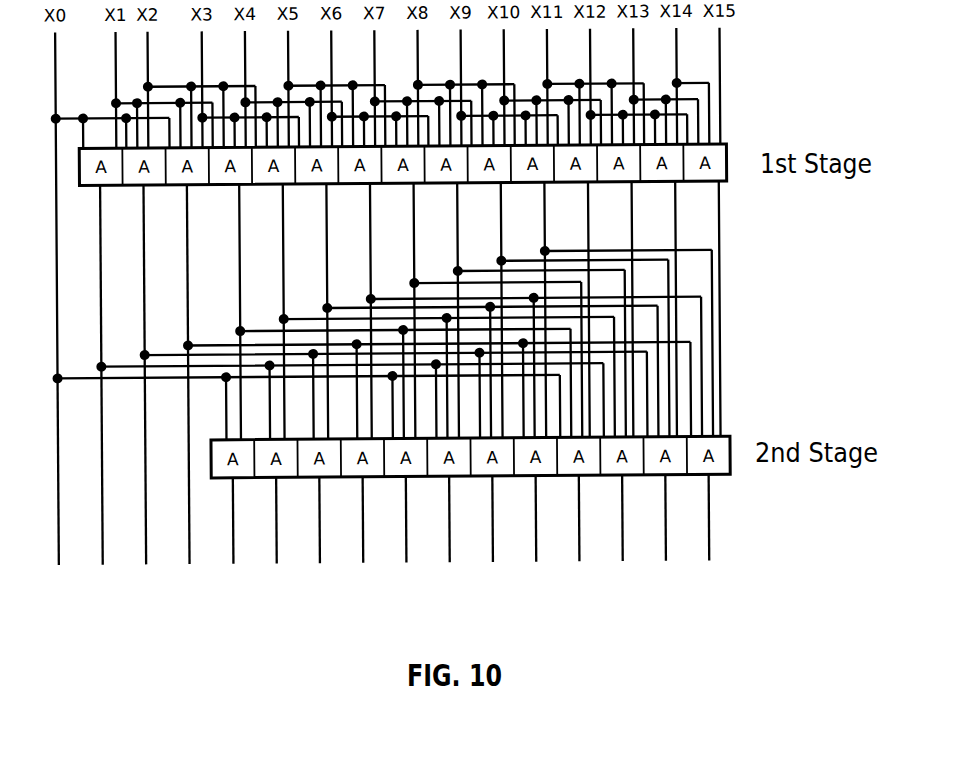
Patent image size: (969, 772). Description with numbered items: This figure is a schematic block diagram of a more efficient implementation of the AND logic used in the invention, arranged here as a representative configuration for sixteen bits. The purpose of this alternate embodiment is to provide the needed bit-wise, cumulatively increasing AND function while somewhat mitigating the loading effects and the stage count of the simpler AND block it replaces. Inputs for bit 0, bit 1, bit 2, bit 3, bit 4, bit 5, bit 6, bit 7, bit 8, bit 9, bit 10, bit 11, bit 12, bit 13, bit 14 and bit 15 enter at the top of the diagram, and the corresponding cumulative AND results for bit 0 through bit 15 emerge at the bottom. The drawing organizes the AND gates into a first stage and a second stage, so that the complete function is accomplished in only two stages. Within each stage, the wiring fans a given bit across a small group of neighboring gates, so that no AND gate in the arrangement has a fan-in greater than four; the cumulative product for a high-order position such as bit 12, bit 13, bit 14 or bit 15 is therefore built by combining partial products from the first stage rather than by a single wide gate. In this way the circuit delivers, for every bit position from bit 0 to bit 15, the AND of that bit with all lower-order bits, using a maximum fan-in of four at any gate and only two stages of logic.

The output bit 0 line 0 is at (58, 491).
The output bit 1 line 1 is at (101, 394).
The output bit 2 line 2 is at (145, 394).
The output bit 3 line 3 is at (188, 394).
The output bit 4 line 4 is at (233, 541).
The output bit 5 line 5 is at (276, 540).
The output bit 6 line 6 is at (320, 540).
The AND block 7 is at (363, 540).
The output bit 8 line 8 is at (406, 540).
The output bit 9 line 9 is at (449, 539).
The output bit 10 line 10 is at (492, 539).
The output bit 11 line 11 is at (535, 539).
The output bit 12 line 12 is at (579, 538).
The output bit 13 line 13 is at (622, 538).
The output bit 14 line 14 is at (665, 538).
The output bit 15 line 15 is at (708, 537).